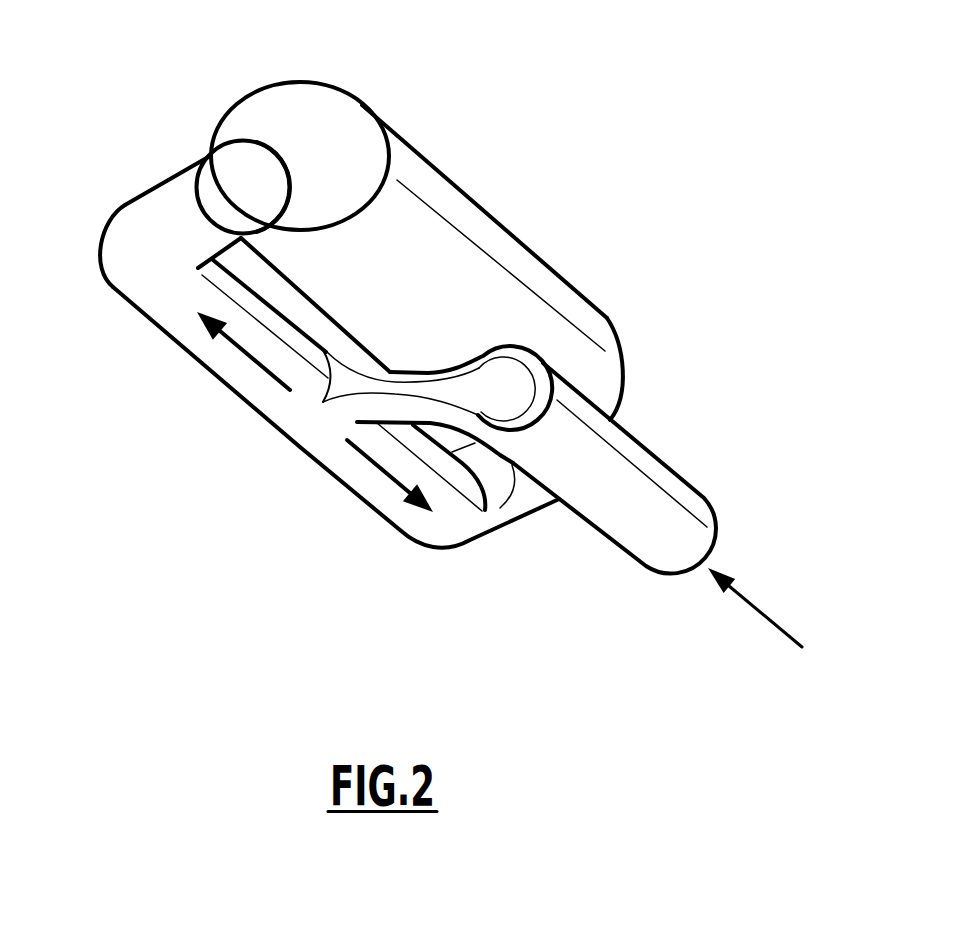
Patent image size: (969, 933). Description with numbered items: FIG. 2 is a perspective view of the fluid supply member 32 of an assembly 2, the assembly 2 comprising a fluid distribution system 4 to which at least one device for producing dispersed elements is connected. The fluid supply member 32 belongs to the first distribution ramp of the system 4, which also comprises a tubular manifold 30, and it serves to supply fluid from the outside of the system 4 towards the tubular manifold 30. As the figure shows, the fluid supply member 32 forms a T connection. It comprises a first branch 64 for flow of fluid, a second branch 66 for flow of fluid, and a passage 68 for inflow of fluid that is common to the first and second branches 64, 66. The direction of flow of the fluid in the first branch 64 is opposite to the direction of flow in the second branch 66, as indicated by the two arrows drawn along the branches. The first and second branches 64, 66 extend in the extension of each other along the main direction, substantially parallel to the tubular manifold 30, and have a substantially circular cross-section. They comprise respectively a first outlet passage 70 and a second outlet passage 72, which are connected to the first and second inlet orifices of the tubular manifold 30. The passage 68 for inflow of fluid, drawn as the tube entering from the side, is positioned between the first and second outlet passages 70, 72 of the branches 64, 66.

The assembly 2 is at (548, 150).
The fluid distribution system 4 is at (637, 352).
The tubular manifold 30 is at (487, 290).
The fluid supply member 32 is at (245, 423).
The first branch 64 is at (448, 503).
The second branch 66 is at (172, 292).
The passage for inflow of fluid 68 is at (659, 542).
The first outlet passage 70 is at (527, 493).
The second outlet passage 72 is at (295, 163).